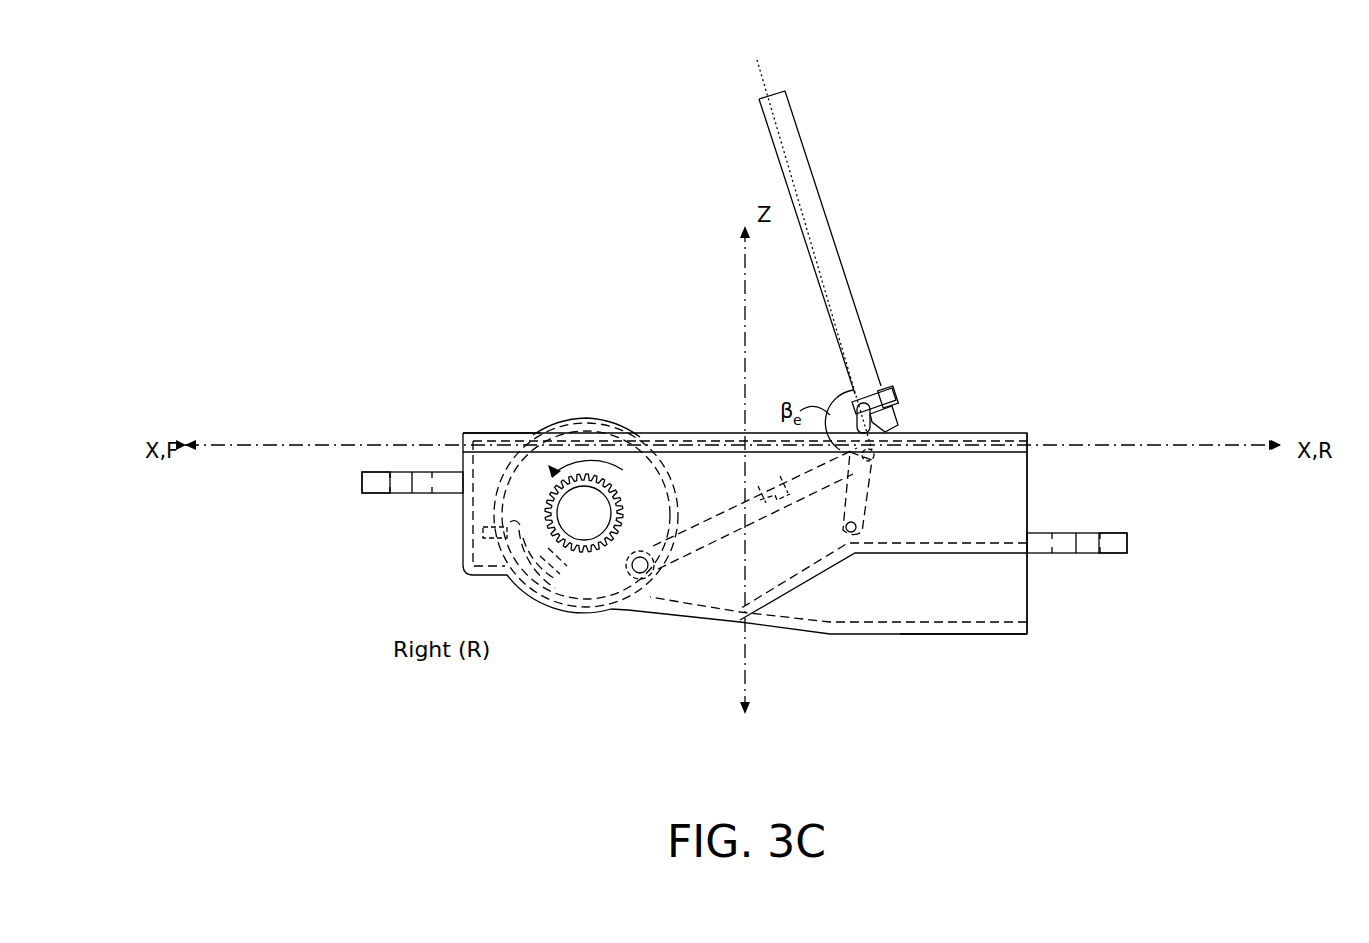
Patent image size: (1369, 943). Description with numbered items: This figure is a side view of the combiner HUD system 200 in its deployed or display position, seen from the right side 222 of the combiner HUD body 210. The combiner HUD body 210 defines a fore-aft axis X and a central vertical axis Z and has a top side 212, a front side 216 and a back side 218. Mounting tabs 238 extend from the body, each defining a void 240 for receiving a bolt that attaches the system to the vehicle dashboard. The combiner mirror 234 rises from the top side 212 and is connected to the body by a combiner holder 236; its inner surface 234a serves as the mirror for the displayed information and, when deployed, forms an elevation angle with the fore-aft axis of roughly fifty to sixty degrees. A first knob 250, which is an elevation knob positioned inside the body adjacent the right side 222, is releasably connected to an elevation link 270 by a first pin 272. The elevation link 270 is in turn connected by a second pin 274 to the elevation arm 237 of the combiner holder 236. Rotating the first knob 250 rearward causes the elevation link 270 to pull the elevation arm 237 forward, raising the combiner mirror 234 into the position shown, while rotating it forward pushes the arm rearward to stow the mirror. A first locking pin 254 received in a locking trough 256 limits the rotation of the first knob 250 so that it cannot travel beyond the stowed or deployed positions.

The combiner HUD system 200 is at (1092, 264).
The combiner HUD body 210 is at (1012, 432).
The top side 212 is at (482, 432).
The front side 216 is at (463, 526).
The back side 218 is at (1027, 470).
The right side 222 is at (925, 597).
The combiner mirror 234 is at (765, 98).
The inner surface 234a is at (790, 173).
The combiner holder 236 is at (893, 402).
The elevation arm 237 is at (870, 495).
The mounting tab 238 is at (362, 483).
The void 240 is at (405, 471).
The first knob 250 is at (512, 500).
The first locking pin 254 is at (510, 528).
The locking trough 256 is at (530, 560).
The elevation link 270 is at (755, 508).
The first pin 272 is at (648, 562).
The second pin 274 is at (872, 458).